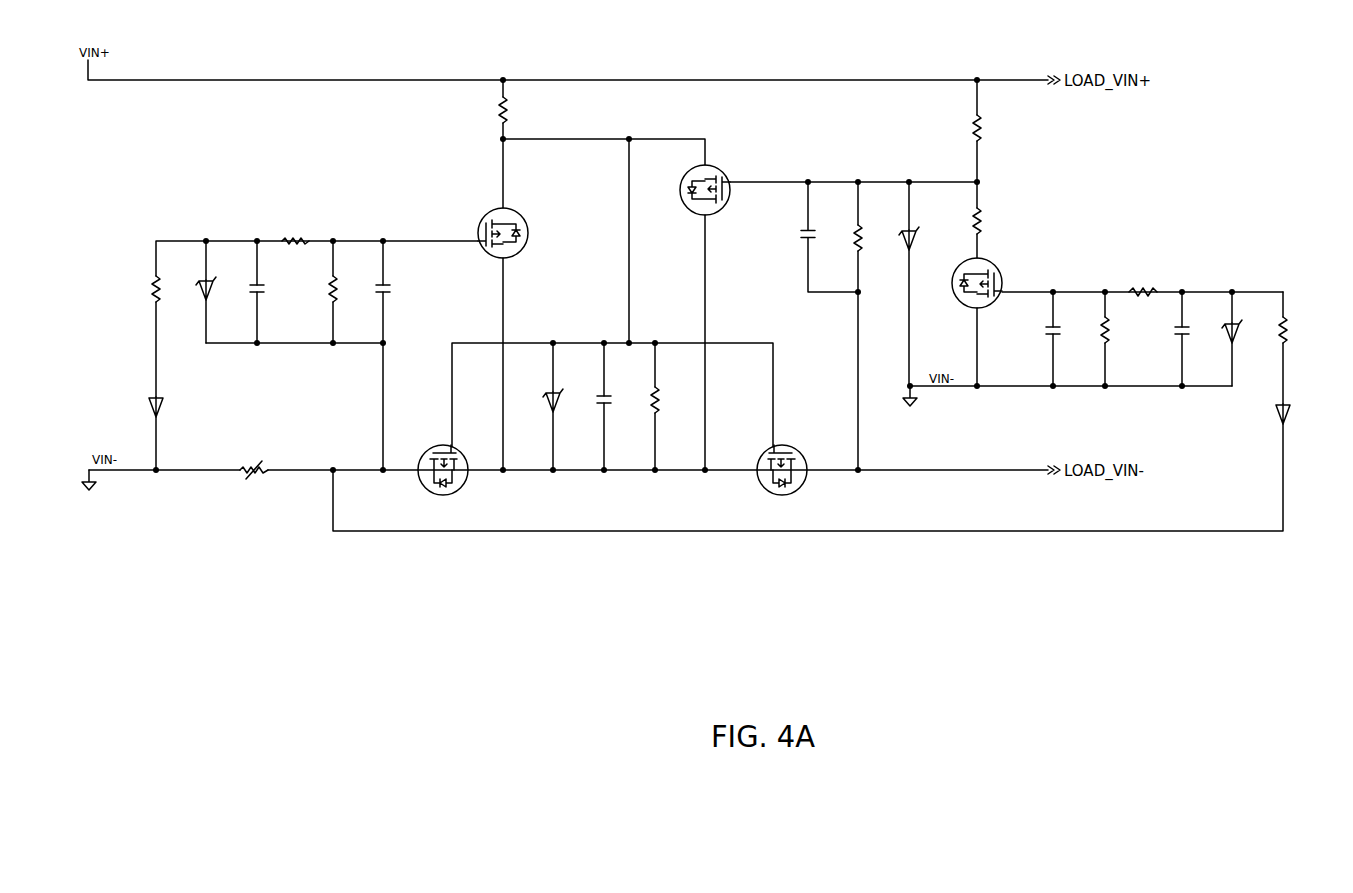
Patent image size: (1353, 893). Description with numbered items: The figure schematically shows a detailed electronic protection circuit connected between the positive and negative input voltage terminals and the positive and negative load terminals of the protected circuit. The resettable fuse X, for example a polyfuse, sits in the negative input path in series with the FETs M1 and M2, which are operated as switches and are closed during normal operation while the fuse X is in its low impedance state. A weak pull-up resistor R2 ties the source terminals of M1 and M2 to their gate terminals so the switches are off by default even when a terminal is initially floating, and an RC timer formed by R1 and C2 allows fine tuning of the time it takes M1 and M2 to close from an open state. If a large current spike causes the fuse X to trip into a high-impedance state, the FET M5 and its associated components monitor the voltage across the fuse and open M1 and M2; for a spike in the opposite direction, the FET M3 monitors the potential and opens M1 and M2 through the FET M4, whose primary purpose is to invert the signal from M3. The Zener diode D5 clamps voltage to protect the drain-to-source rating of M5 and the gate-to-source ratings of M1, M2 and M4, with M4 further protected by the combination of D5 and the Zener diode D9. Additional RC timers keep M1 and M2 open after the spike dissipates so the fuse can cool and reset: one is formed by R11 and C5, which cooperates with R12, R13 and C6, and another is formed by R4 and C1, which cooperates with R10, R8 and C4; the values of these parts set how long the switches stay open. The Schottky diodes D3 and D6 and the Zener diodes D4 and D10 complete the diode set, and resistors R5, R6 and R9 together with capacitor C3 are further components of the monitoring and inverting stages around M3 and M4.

The resistor R1 is at (520, 109).
The pull-up resistor R2 is at (642, 406).
The resistor R4 is at (1296, 348).
The resistor R5 is at (992, 131).
The resistor R6 is at (872, 326).
The resistor R8 is at (1118, 339).
The resistor R9 is at (992, 220).
The resistor R10 is at (1141, 279).
The resistor R11 is at (133, 289).
The resistor R12 is at (298, 227).
The resistor R13 is at (351, 292).
The capacitor C1 is at (1194, 339).
The capacitor C2 is at (592, 406).
The capacitor C3 is at (829, 237).
The capacitor C4 is at (1065, 339).
The capacitor C5 is at (268, 292).
The capacitor C6 is at (394, 355).
The Schottky diode D3 is at (1298, 414).
The Zener diode D4 is at (1241, 339).
The Zener diode D5 is at (542, 406).
The Schottky diode D6 is at (137, 406).
The Zener diode D9 is at (920, 284).
The Zener diode D10 is at (221, 292).
The FET M1 is at (794, 475).
The FET M2 is at (458, 475).
The FET M3 is at (1117, 317).
The FET M4 is at (828, 183).
The FET M5 is at (470, 233).
The resettable fuse X is at (252, 492).